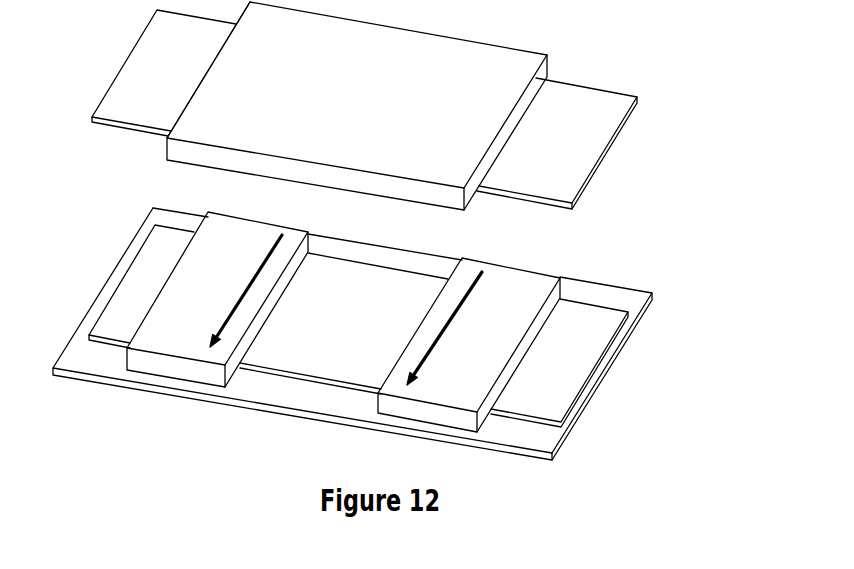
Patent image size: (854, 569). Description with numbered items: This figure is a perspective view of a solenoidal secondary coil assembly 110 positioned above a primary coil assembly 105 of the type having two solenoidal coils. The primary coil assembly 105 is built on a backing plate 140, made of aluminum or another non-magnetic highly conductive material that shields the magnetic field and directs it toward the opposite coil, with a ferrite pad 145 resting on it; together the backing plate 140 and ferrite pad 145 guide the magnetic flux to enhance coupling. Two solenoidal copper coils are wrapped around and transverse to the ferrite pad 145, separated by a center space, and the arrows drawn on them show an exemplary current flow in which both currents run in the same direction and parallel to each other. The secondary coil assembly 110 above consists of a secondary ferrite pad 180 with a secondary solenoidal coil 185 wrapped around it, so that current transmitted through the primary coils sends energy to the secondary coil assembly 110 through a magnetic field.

The primary coil assembly 105 is at (389, 334).
The secondary coil assembly 110 is at (401, 106).
The backing plate 140 is at (313, 402).
The ferrite pad 145 is at (363, 340).
The secondary ferrite pad 180 is at (180, 76).
The secondary solenoidal coil 185 is at (378, 110).